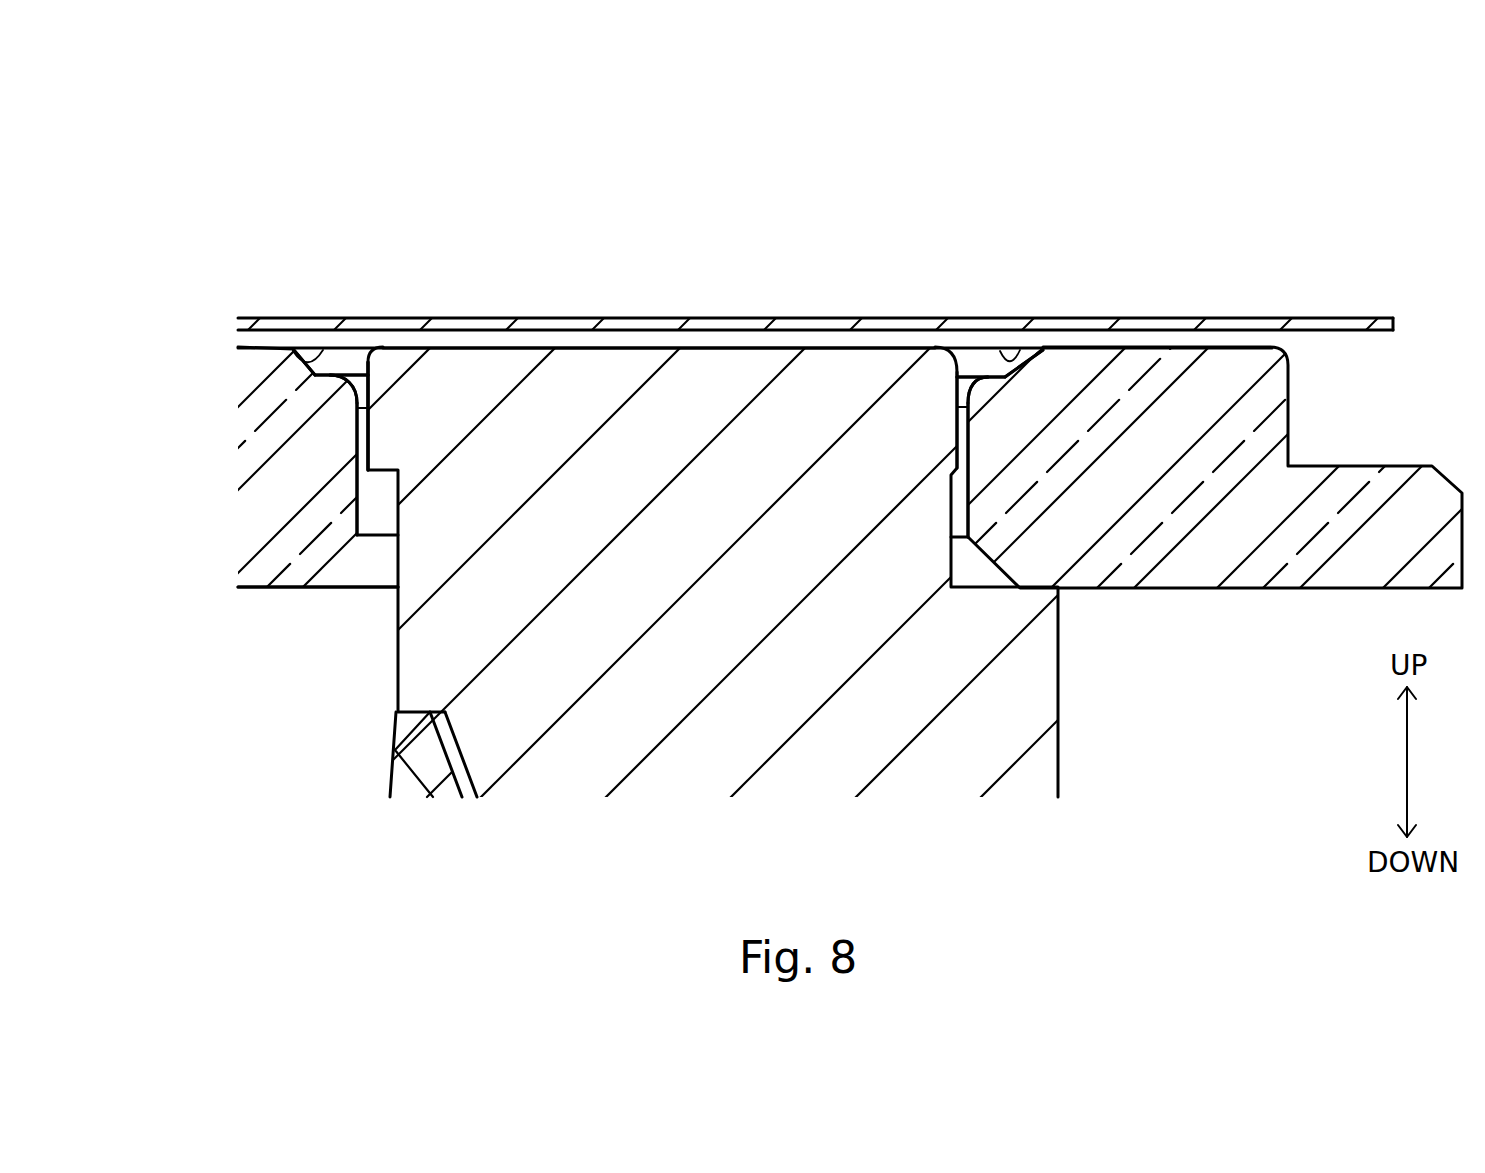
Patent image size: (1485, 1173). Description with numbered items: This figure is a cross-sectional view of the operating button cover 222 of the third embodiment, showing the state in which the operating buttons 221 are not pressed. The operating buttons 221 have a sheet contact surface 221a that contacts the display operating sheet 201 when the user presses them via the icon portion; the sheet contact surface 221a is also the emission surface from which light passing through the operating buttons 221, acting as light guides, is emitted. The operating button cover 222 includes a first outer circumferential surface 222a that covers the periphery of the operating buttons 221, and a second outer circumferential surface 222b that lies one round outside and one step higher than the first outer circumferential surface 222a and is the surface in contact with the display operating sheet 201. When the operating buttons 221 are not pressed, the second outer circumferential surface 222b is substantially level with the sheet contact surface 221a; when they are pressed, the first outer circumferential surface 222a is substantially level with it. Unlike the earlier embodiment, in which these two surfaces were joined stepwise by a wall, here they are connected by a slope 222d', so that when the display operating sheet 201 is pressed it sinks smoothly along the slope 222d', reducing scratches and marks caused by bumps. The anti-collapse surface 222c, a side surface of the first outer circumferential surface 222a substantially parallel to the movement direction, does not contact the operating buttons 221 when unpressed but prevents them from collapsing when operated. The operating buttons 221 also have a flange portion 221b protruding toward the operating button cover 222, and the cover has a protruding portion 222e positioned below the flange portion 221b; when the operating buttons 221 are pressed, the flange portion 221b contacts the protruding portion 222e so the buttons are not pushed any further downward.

The display operating sheet 201 is at (737, 313).
The operating buttons 221 is at (1025, 690).
The sheet contact surface 221a is at (812, 350).
The flange portion 221b is at (392, 426).
The operating button cover 222 is at (306, 552).
The first outer circumferential surface 222a is at (333, 377).
The second outer circumferential surface 222b is at (253, 349).
The anti-collapse surface 222c is at (367, 467).
The slope 222d' is at (685, 272).
The protruding portion 222e is at (365, 567).